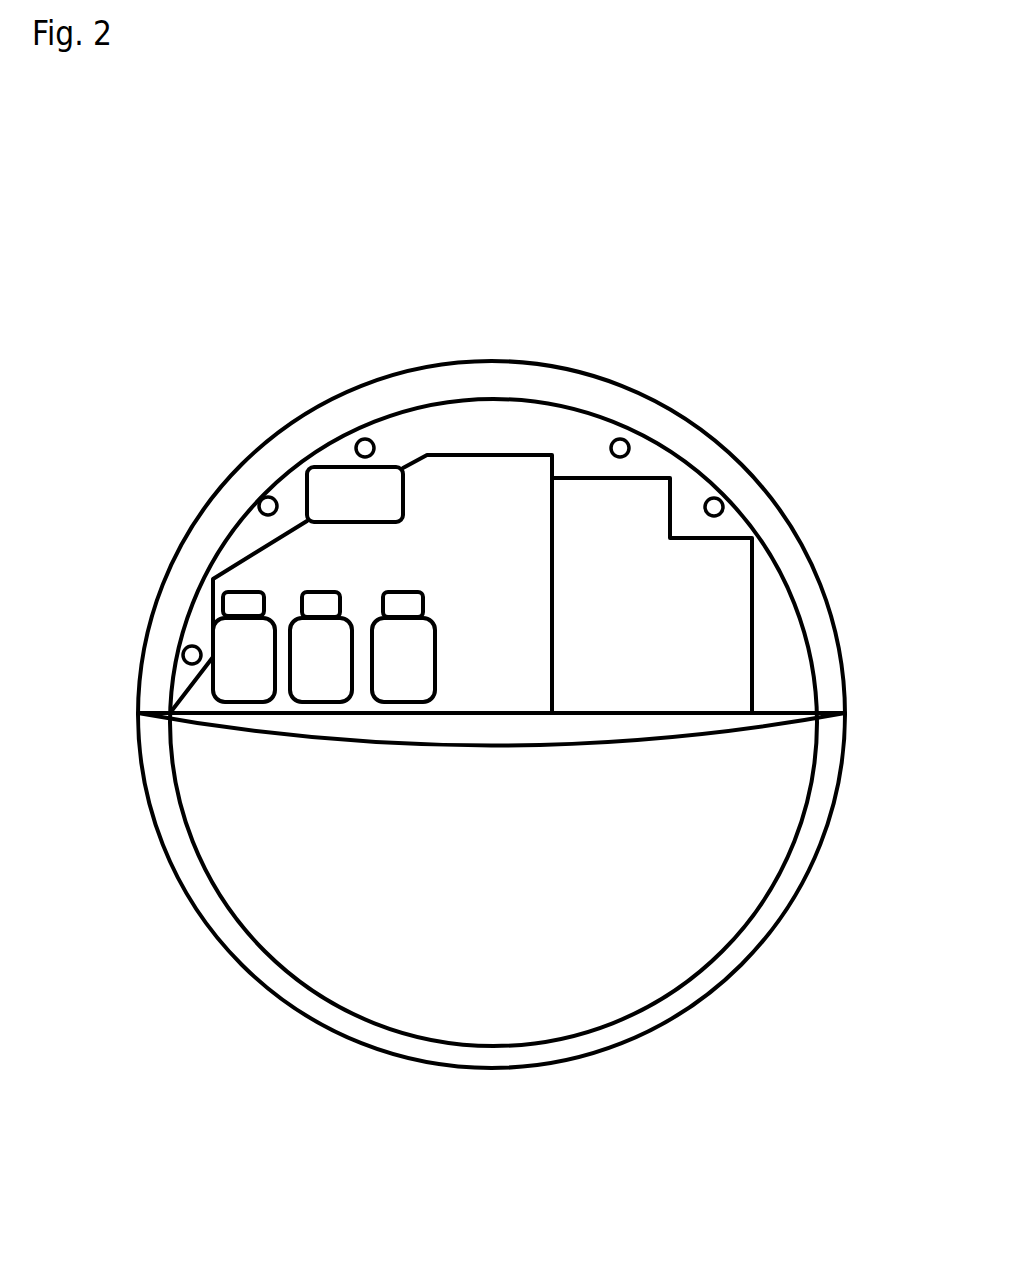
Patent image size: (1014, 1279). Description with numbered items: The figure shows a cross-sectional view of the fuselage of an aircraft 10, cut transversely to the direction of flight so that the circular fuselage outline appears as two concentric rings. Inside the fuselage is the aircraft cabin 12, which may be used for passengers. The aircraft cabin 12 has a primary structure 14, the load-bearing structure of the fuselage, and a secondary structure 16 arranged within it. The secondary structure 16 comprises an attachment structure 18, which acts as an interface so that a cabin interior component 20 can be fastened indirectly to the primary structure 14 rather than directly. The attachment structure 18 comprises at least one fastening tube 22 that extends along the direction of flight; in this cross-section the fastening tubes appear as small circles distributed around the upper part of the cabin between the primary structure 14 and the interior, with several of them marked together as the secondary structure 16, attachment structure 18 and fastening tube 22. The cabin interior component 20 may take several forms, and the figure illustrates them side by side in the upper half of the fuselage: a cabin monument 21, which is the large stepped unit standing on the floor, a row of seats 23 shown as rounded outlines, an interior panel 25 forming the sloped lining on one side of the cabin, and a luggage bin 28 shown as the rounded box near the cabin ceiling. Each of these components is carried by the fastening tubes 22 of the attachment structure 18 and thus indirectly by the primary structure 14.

The aircraft 10 is at (180, 162).
The aircraft cabin 12 is at (490, 420).
The primary structure 14 is at (177, 592).
The secondary structure 16 is at (465, 508).
The attachment structure 18 is at (465, 508).
The fastening tube 22 is at (365, 446).
The cabin interior component 20 is at (491, 643).
The cabin monument 21 is at (636, 692).
The seat 23 is at (419, 634).
The interior panel 25 is at (258, 547).
The luggage bin 28 is at (393, 497).